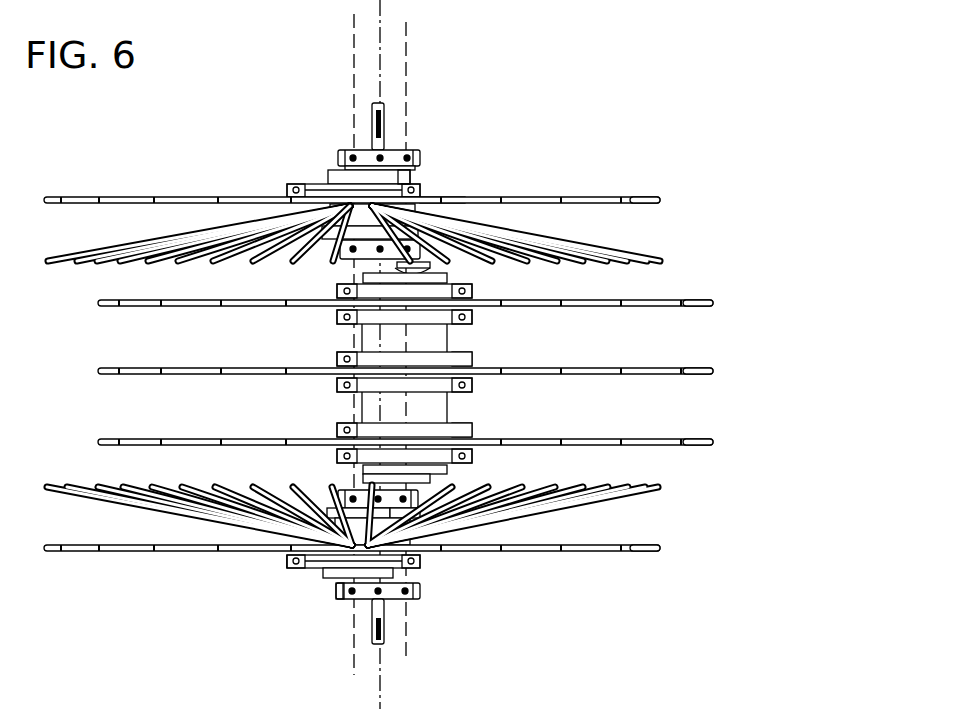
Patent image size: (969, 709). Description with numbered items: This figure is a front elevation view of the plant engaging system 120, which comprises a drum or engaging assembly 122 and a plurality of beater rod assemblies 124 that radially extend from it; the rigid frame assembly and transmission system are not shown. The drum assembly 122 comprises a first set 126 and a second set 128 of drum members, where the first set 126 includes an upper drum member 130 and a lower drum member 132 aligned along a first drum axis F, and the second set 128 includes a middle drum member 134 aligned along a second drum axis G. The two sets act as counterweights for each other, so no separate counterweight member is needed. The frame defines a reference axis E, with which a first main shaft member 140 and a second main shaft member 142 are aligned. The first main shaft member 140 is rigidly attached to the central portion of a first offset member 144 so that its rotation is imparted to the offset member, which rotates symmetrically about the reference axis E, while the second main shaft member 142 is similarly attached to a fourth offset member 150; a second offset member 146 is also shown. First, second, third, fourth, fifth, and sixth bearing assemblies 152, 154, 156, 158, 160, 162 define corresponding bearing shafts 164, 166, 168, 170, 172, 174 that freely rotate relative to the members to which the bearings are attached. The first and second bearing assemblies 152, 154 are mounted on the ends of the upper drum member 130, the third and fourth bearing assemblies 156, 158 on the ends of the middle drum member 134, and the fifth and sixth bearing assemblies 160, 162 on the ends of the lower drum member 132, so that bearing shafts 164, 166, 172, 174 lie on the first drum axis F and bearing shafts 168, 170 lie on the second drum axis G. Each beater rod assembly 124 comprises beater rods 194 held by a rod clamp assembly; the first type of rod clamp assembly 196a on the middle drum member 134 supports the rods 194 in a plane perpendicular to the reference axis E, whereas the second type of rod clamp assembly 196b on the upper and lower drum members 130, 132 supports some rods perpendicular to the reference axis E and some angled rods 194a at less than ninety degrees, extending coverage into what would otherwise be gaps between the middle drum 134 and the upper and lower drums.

The plant engaging system 120 is at (466, 354).
The drum assembly 122 is at (452, 168).
The beater rod assemblies 124 is at (675, 201).
The first set of drum members 126 is at (335, 180).
The second set of drum members 128 is at (457, 181).
The upper drum member 130 is at (335, 183).
The lower drum member 132 is at (305, 570).
The middle drum member 134 is at (345, 404).
The first main shaft member 140 is at (386, 130).
The second main shaft member 142 is at (386, 618).
The first offset member 144 is at (418, 158).
The second offset member 146 is at (335, 304).
The fourth offset member 150 is at (422, 592).
The first bearing assembly 152 is at (330, 180).
The second bearing assembly 154 is at (295, 263).
The third bearing assembly 156 is at (478, 296).
The fourth bearing assembly 158 is at (478, 441).
The fifth bearing assembly 160 is at (340, 493).
The sixth bearing assembly 162 is at (338, 578).
The first bearing shaft 164 is at (338, 172).
The second bearing shaft 166 is at (340, 287).
The third bearing shaft 168 is at (425, 268).
The fourth bearing shaft 170 is at (452, 478).
The fifth bearing shaft 172 is at (336, 460).
The sixth bearing shaft 174 is at (350, 600).
The beater rods 194 is at (640, 198).
The angled rods 194a is at (632, 250).
The first type of rod clamp assembly 196a is at (481, 323).
The second type of rod clamp assembly 196b is at (427, 174).
The reference axis E is at (385, 42).
The first drum axis F is at (354, 28).
The second drum axis G is at (407, 52).